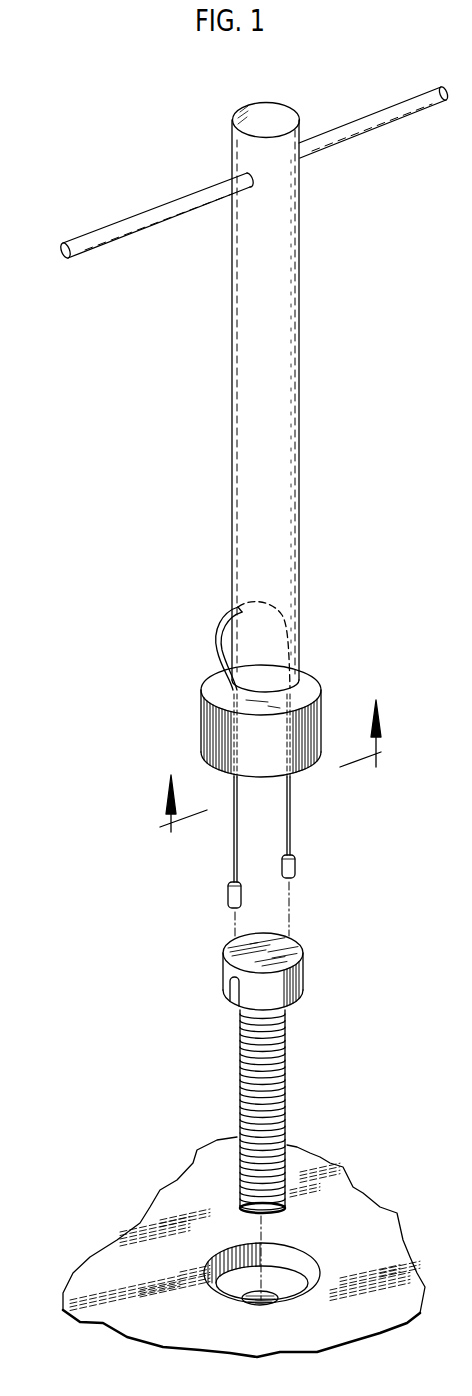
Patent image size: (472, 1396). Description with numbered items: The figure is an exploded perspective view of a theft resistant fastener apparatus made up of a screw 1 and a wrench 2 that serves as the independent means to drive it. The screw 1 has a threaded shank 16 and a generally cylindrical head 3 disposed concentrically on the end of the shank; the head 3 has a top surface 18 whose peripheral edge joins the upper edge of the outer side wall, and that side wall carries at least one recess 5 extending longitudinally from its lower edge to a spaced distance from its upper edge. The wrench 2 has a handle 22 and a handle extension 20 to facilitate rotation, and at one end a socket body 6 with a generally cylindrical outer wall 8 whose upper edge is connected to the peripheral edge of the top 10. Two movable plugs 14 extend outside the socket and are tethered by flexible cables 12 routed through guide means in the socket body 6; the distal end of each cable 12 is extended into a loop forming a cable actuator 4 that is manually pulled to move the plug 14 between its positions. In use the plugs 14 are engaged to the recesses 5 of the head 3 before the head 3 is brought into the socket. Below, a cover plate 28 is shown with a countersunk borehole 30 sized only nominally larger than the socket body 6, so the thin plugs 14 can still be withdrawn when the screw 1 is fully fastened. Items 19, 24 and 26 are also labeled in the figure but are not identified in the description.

The screw 1 is at (256, 1102).
The wrench 2 is at (254, 370).
The generally cylindrical head 3 is at (256, 957).
The cable actuator 4 is at (218, 636).
The recess 5 is at (160, 1005).
The socket body 6 is at (280, 854).
The outer wall 8 is at (330, 696).
The top 10 is at (316, 680).
The flexible cable 12 is at (233, 820).
The movable plug 14 is at (228, 893).
The threaded shank 16 is at (287, 1112).
The top surface 18 is at (296, 948).
The slot in screw head 19 is at (220, 980).
The handle extension 20 is at (352, 122).
The handle 22 is at (300, 268).
The threaded bore 24 is at (300, 1291).
The countersunk hole 26 is at (320, 1276).
The cover plate 28 is at (244, 1247).
The countersunk borehole 30 is at (310, 1256).